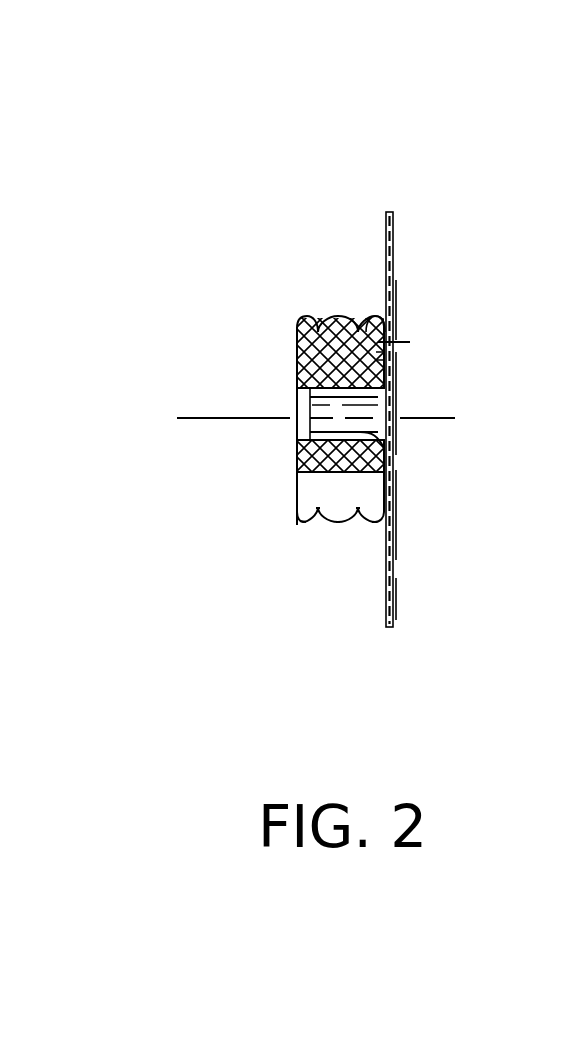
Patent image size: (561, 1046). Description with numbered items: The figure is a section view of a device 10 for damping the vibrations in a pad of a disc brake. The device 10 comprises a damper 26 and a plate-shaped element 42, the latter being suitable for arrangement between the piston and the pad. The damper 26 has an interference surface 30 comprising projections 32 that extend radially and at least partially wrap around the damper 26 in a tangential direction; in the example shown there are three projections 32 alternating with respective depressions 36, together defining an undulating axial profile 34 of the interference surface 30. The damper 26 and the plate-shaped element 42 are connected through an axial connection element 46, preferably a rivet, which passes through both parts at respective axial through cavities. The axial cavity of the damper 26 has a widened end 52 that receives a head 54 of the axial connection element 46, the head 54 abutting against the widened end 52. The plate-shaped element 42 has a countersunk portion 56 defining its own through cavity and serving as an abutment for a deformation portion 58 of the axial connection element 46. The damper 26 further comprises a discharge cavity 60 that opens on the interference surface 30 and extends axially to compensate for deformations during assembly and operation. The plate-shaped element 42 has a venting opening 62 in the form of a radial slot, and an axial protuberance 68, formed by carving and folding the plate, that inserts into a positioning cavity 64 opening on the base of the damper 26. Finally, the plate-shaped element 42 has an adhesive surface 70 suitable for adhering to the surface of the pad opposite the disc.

The device for damping the vibrations in a pad of a disc brake 10 is at (406, 190).
The damper 26 is at (296, 470).
The interference surface 30 is at (295, 310).
The projection 32 is at (303, 525).
The undulating axial profile 34 is at (338, 318).
The depression 36 is at (322, 512).
The plate-shaped element 42 is at (393, 250).
The axial connection element 46 is at (395, 410).
The widened end 52 is at (295, 450).
The head 54 is at (297, 438).
The countersunk portion 56 is at (396, 462).
The deformation portion 58 is at (396, 437).
The discharge cavity 60 is at (394, 505).
The venting opening 62 is at (393, 565).
The positioning cavity 64 is at (375, 318).
The axial protuberance 68 is at (395, 332).
The adhesive surface 70 is at (396, 295).